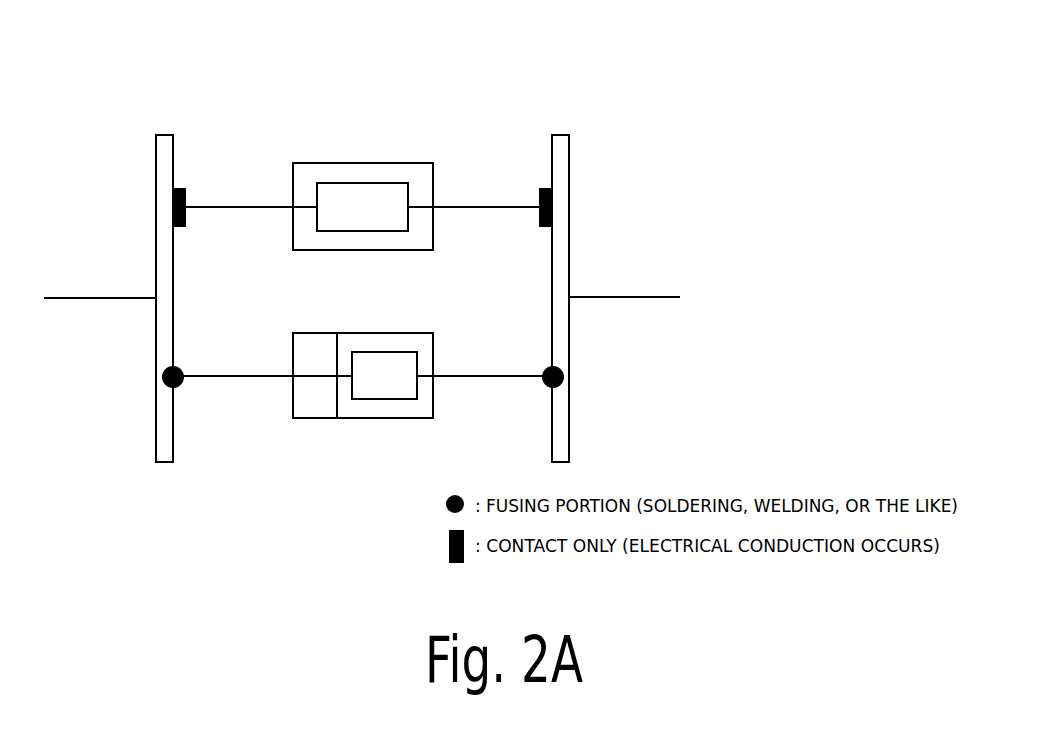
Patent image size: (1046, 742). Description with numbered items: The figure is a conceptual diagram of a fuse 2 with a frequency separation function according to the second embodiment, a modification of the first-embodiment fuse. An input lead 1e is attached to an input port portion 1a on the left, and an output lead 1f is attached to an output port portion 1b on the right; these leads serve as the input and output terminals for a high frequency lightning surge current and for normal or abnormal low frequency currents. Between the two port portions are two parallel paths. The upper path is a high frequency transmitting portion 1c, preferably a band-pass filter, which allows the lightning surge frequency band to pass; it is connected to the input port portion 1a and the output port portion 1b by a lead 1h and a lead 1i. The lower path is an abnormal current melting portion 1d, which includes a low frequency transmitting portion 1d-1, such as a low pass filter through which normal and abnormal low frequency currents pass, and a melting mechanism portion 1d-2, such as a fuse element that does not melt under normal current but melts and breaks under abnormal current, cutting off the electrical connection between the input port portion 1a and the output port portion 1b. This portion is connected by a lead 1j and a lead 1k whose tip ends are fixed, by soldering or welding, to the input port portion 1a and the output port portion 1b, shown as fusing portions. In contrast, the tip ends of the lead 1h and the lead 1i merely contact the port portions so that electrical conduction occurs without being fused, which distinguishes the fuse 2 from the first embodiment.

The fuse with a frequency separation function 2 is at (445, 87).
The input port portion 1a is at (165, 134).
The output port portion 1b is at (562, 134).
The high frequency transmitting portion 1c is at (392, 163).
The abnormal current melting portion 1d is at (363, 372).
The low frequency transmitting portion 1d-1 is at (387, 388).
The melting mechanism portion 1d-2 is at (312, 407).
The input lead 1e is at (90, 297).
The output lead 1f is at (644, 297).
The lead 1h is at (235, 206).
The lead 1i is at (490, 206).
The lead 1j is at (235, 375).
The lead 1k is at (489, 375).